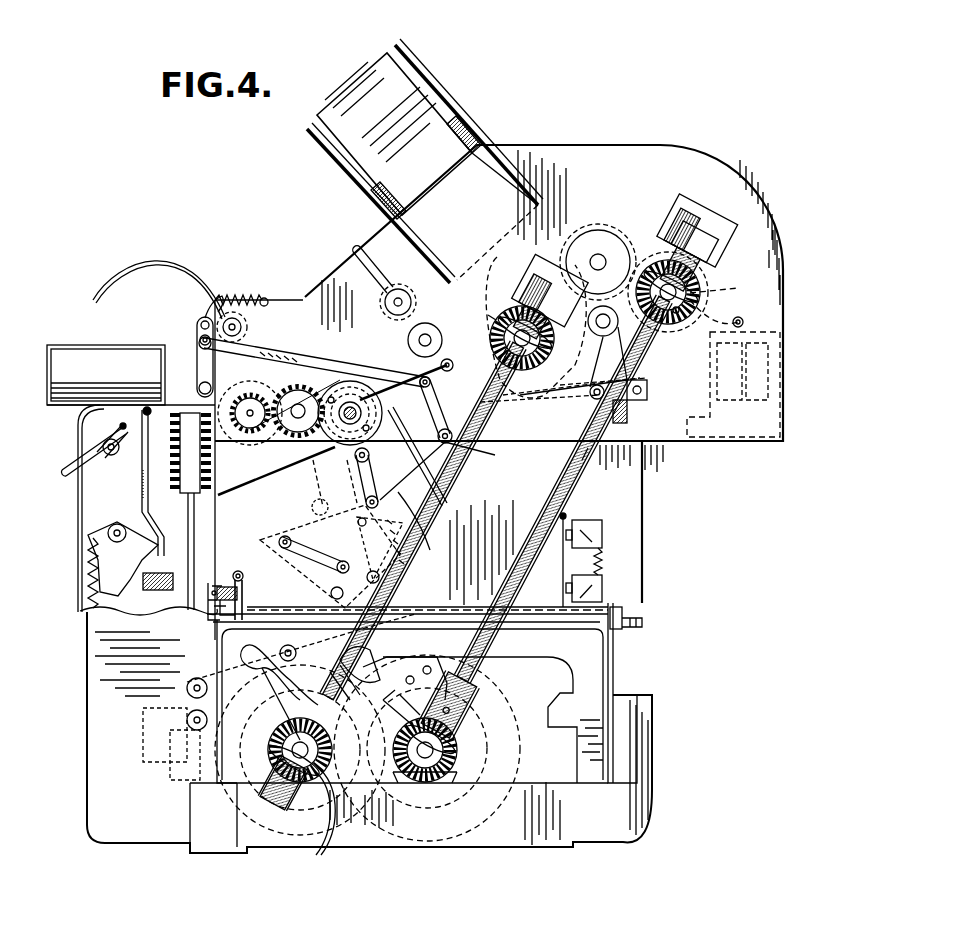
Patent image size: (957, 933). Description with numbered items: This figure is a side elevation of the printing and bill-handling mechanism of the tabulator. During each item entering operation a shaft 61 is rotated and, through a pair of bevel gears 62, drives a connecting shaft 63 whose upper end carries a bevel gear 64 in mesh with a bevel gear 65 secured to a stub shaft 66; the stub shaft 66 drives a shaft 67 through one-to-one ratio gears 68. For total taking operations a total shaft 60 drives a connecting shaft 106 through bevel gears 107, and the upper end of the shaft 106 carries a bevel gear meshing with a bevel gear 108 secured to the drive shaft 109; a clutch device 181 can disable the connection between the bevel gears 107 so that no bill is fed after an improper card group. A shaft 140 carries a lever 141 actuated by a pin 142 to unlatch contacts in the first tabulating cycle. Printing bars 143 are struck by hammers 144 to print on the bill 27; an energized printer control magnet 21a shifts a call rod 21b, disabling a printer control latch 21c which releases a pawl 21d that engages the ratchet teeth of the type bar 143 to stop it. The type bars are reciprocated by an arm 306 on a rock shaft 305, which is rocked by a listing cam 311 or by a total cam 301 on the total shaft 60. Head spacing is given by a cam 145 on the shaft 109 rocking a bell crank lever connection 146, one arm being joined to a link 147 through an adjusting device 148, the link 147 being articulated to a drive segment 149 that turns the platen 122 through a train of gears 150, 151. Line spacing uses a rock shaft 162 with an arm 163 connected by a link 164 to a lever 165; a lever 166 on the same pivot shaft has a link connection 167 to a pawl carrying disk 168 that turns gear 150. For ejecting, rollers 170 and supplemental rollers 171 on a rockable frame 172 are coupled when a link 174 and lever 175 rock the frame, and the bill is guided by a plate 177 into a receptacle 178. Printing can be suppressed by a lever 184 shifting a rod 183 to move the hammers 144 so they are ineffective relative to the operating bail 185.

The bill 27 is at (458, 120).
The pin 142 is at (682, 258).
The shaft 67 is at (602, 254).
The one-to-one ratio gears 68 is at (660, 262).
The bevel gear 64 is at (690, 292).
The stub shaft 66 is at (727, 299).
The lever 141 is at (740, 318).
The bevel gear 65 is at (674, 312).
The bell crank lever connection 146 is at (647, 372).
The shaft 140 is at (733, 331).
The adjusting device 148 is at (630, 402).
The link 147 is at (590, 455).
The printer control magnet 21a is at (595, 572).
The connecting shaft 63 is at (527, 560).
The call rod 21b is at (467, 609).
The connecting shaft 106 is at (393, 590).
The link 164 is at (431, 551).
The lever 166 is at (447, 502).
The lever 165 is at (480, 461).
The arm 163 is at (372, 480).
The rock shaft 162 is at (370, 456).
The link connection 167 is at (424, 396).
The drive shaft 109 is at (510, 400).
The lever 175 is at (450, 372).
The drive segment 149 is at (360, 330).
The gear 150 is at (422, 344).
The bevel gear 108 is at (492, 318).
The cam 145 is at (497, 290).
The link 174 is at (250, 348).
The rollers 170 is at (255, 297).
The supplemental rollers 171 is at (210, 316).
The rockable frame 172 is at (198, 345).
The guide plate 177 is at (160, 258).
The receptacle 178 is at (100, 360).
The lever 184 is at (65, 464).
The rod 183 is at (114, 455).
The hammer 144 is at (143, 445).
The printing bar 143 is at (182, 460).
The gear 151 is at (250, 435).
The pawl carrying disk 168 is at (333, 432).
The platen 122 is at (280, 544).
The operating bail 185 is at (92, 549).
The printer control latch 21c is at (243, 590).
The pawl 21d is at (210, 593).
The arm 306 is at (297, 613).
The clutch device 181 is at (279, 686).
The rock shaft 305 is at (398, 652).
The bevel gears 62 is at (470, 728).
The shaft 61 is at (437, 751).
The total cam 301 is at (247, 764).
The total shaft 60 is at (270, 808).
The bevel gears 107 is at (303, 816).
The listing cam 311 is at (505, 800).